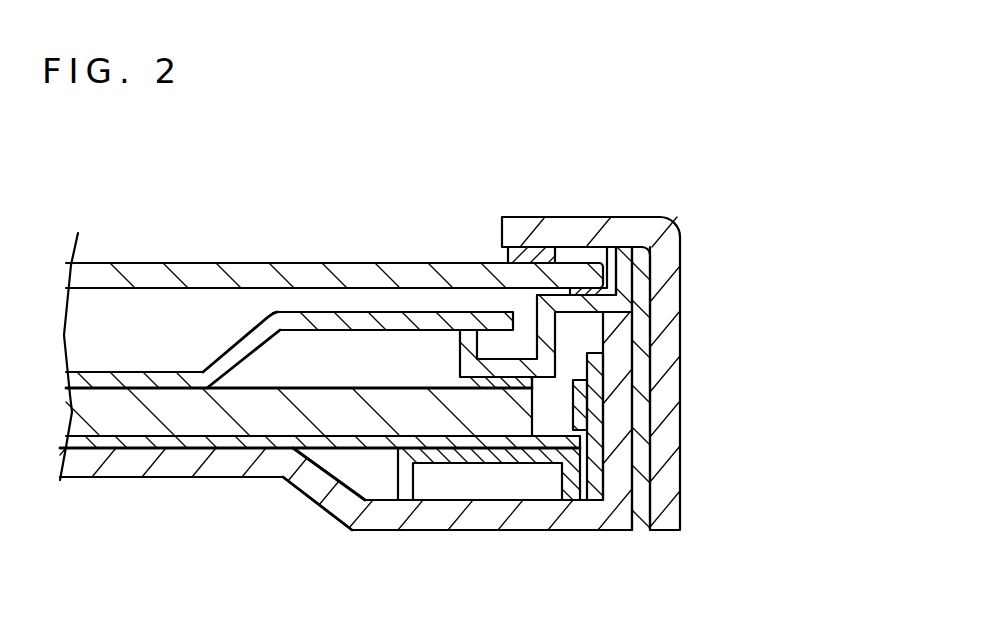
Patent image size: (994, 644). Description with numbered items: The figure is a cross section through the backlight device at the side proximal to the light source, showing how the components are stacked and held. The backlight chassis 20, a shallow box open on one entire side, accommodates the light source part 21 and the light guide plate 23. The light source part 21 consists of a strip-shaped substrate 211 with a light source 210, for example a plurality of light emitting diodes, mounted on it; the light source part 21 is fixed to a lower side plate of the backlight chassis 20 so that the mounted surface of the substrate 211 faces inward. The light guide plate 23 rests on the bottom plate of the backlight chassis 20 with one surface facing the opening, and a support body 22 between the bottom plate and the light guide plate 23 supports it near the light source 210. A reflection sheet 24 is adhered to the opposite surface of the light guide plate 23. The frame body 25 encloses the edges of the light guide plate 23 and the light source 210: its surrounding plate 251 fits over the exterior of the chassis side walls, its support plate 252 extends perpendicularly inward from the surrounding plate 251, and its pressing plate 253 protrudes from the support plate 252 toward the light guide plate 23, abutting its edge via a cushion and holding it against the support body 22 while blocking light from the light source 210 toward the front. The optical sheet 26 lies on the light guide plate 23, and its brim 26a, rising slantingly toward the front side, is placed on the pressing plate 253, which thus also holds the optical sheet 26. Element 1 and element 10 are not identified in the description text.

The display panel 1 is at (362, 272).
The front housing cover 10 is at (568, 225).
The backlight chassis 20 is at (565, 520).
The light source part 21 is at (790, 397).
The light source 210 is at (576, 412).
The substrate 211 is at (593, 458).
The support body 22 is at (413, 486).
The light guide plate 23 is at (128, 420).
The reflection sheet 24 is at (213, 440).
The frame body 25 is at (790, 248).
The surrounding plate 251 is at (643, 328).
The support plate 252 is at (603, 300).
The pressing plate 253 is at (547, 352).
The optical sheet 26 is at (160, 378).
The brim 26a is at (320, 320).